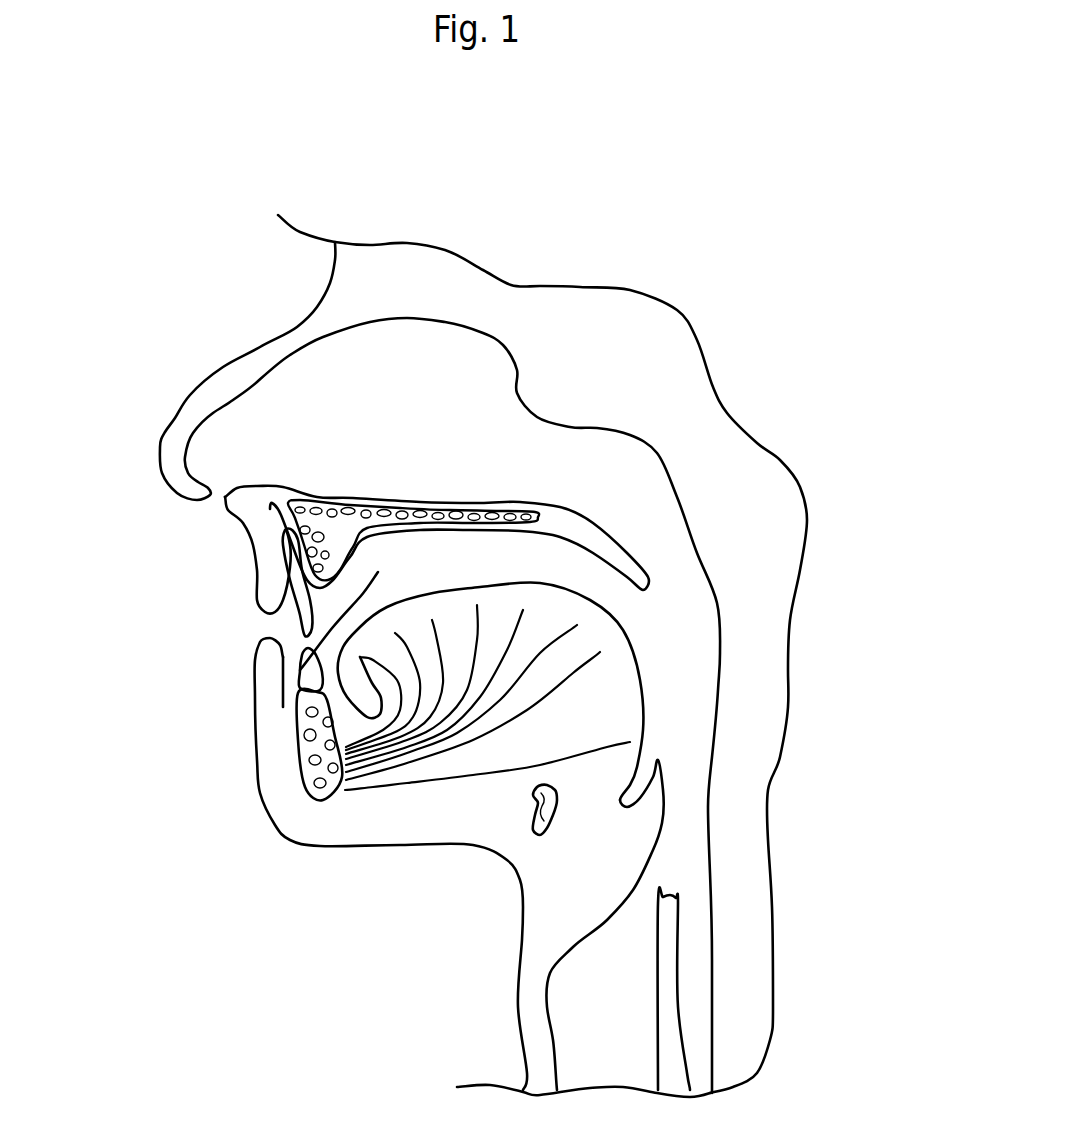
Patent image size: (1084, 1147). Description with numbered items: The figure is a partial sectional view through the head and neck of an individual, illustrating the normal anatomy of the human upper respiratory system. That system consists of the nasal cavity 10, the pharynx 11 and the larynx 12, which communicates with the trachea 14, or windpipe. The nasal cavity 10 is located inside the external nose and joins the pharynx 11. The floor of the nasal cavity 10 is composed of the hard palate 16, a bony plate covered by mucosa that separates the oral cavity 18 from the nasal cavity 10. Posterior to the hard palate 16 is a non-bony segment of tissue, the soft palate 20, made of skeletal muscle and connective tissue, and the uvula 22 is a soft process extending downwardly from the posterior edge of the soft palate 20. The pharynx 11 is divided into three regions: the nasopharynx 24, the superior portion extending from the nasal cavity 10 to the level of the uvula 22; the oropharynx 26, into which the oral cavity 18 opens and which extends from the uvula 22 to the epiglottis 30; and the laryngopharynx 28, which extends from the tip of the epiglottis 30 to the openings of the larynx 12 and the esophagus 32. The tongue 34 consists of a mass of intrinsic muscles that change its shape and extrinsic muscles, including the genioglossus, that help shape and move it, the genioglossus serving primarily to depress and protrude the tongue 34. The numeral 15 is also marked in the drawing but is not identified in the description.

The nasal cavity 10 is at (357, 409).
The pharynx 11 is at (840, 628).
The larynx 12 is at (610, 952).
The trachea 14 is at (600, 1015).
The oropharynx airway 15 is at (677, 727).
The hard palate 16 is at (483, 507).
The oral cavity 18 is at (350, 618).
The soft palate 20 is at (608, 523).
The uvula 22 is at (650, 568).
The nasopharynx 24 is at (618, 473).
The oropharynx 26 is at (677, 670).
The laryngopharynx 28 is at (673, 842).
The epiglottis 30 is at (663, 777).
The esophagus 32 is at (697, 942).
The tongue 34 is at (457, 637).